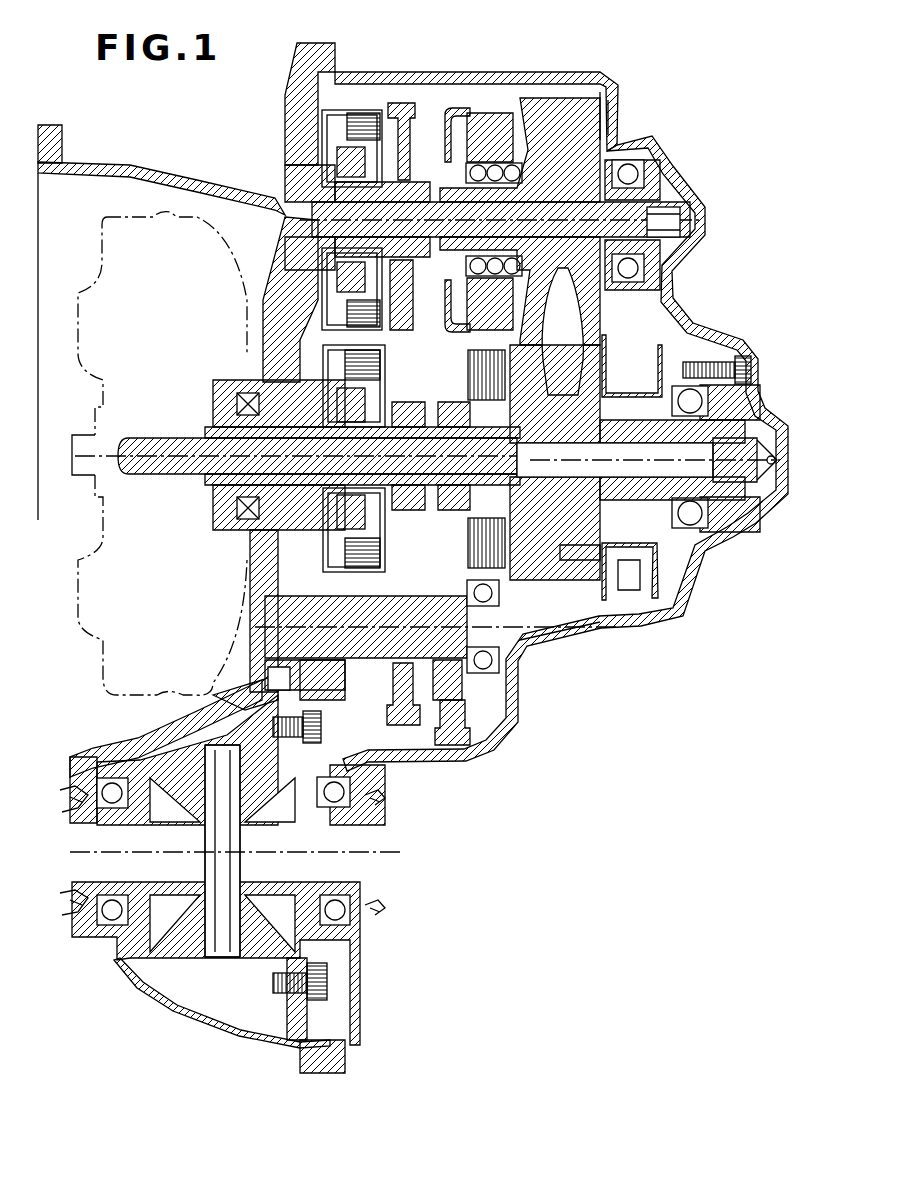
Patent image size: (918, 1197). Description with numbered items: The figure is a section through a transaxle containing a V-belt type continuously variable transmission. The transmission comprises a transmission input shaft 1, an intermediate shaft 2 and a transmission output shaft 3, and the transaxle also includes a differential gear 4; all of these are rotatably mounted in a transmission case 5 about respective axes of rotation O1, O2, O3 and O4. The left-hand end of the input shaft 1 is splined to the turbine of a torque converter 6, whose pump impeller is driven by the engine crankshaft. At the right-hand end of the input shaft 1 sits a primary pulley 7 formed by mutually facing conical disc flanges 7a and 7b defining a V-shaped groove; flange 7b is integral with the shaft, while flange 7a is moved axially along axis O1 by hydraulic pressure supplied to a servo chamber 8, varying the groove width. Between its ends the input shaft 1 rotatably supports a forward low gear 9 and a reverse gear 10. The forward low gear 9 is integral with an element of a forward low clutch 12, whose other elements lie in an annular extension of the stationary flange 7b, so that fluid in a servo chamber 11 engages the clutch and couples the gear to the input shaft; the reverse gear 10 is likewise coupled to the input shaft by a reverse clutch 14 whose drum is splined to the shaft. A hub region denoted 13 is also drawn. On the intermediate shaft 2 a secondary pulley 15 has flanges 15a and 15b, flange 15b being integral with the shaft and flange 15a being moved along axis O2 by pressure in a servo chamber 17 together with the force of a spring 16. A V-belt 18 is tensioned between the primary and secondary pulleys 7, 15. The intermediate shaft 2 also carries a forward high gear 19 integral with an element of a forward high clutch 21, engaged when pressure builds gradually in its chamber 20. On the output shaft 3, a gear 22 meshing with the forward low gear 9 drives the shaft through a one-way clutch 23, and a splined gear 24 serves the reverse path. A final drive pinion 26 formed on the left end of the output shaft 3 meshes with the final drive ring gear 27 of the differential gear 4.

The transmission input shaft 1 is at (158, 440).
The intermediate shaft 2 is at (322, 232).
The transmission output shaft 3 is at (472, 703).
The differential gear 4 is at (242, 972).
The transmission case 5 is at (660, 152).
The torque converter 6 is at (102, 237).
The primary pulley 7 is at (612, 595).
The movable conical disc flange 7a is at (622, 575).
The stationary conical disc flange 7b is at (575, 568).
The servo chamber 8 is at (607, 372).
The forward low gear 9 is at (448, 402).
The reverse gear 10 is at (403, 402).
The servo chamber 11 is at (500, 517).
The forward low clutch 12 is at (547, 642).
The hub 13 is at (335, 365).
The reverse clutch 14 is at (325, 549).
The secondary pulley 15 is at (604, 75).
The movable conical disc flange 15a is at (528, 95).
The stationary conical disc flange 15b is at (585, 130).
The spring 16 is at (498, 150).
The servo chamber 17 is at (458, 145).
The V-belt 18 is at (555, 100).
The forward high gear 19 is at (393, 103).
The chamber 20 is at (330, 197).
The forward high clutch 21 is at (350, 97).
The gear 22 is at (462, 700).
The one-way clutch 23 is at (482, 707).
The gear 24 is at (410, 727).
The final drive pinion 26 is at (362, 790).
The final drive ring gear 27 is at (358, 1042).
The axis of rotation O1 is at (170, 470).
The axis of rotation O2 is at (665, 208).
The axis of rotation O3 is at (357, 625).
The axis of rotation O4 is at (375, 853).